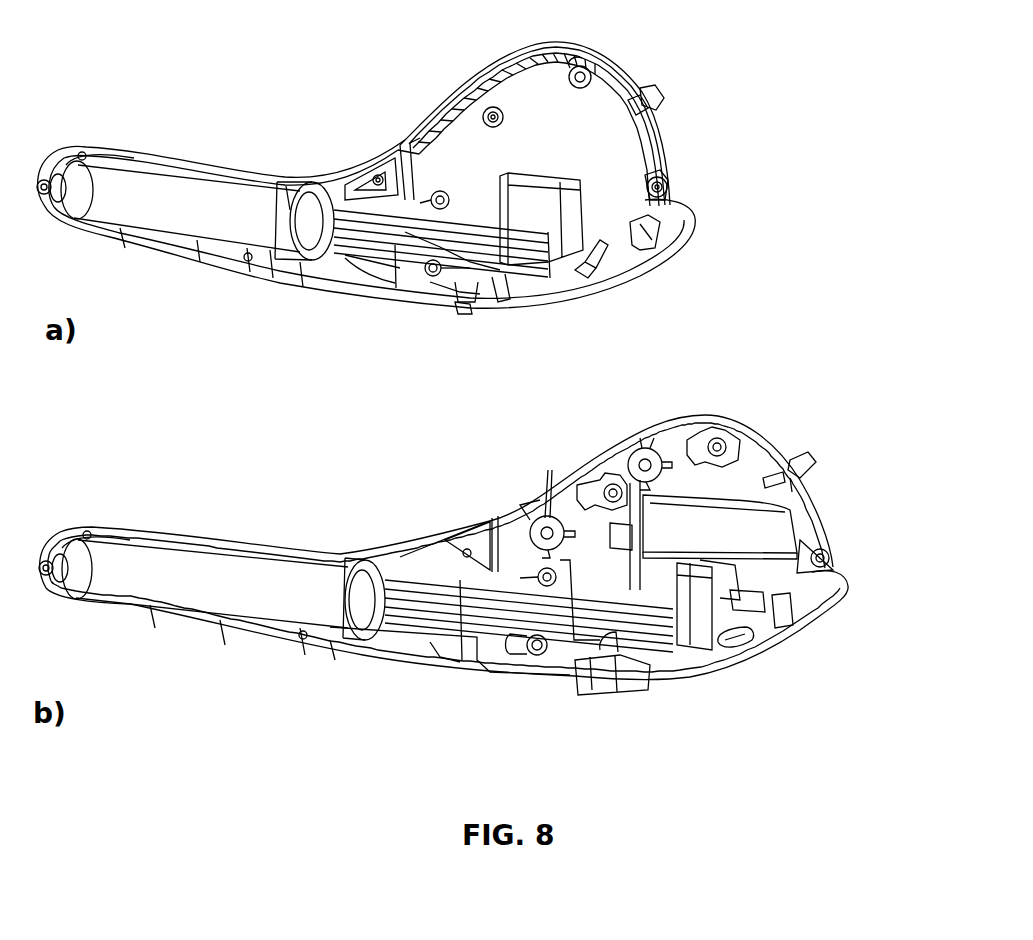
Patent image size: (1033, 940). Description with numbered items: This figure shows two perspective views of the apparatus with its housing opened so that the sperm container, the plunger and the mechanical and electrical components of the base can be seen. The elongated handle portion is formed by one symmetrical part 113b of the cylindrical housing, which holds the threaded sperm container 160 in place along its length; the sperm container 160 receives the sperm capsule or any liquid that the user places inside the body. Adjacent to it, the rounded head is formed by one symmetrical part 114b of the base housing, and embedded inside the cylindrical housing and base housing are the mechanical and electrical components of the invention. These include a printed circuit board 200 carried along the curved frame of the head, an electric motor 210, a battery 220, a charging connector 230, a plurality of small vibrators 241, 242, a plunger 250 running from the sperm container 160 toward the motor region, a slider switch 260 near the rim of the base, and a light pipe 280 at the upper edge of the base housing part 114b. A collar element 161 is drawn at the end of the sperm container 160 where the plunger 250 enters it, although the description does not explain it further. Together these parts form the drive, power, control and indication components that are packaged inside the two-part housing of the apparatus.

The symmetrical part of cylindrical housing 113b is at (98, 148).
The symmetrical part of base housing 114b is at (597, 63).
The sperm container 160 is at (153, 218).
The battery holder collar 161 is at (320, 203).
The printed circuit board 200 is at (536, 80).
The electric motor 210 is at (560, 258).
The battery 220 is at (780, 529).
The charging connector 230 is at (602, 663).
The small vibrator 241 is at (547, 527).
The small vibrator 242 is at (645, 460).
The plunger 250 is at (405, 237).
The slider switch 260 is at (593, 265).
The light pipe 280 is at (647, 96).